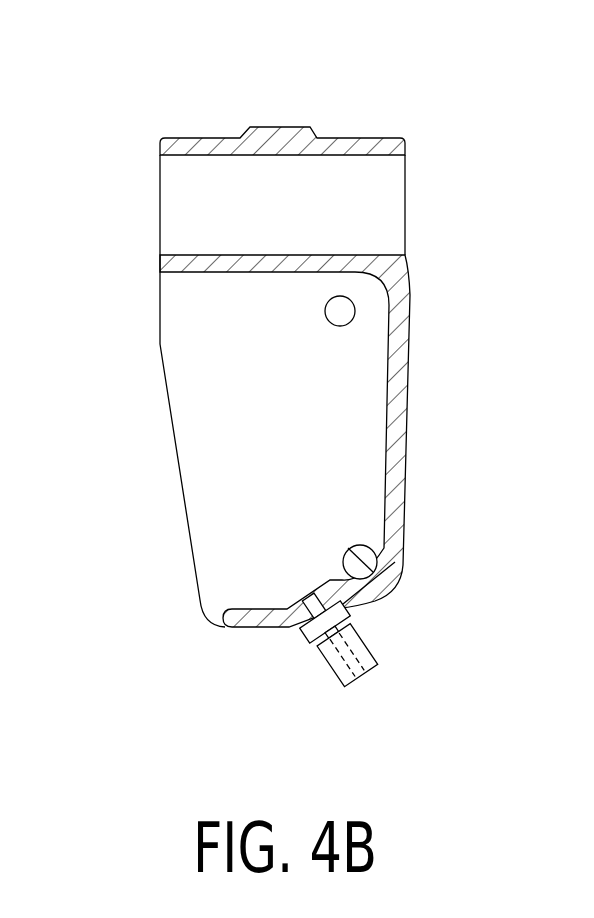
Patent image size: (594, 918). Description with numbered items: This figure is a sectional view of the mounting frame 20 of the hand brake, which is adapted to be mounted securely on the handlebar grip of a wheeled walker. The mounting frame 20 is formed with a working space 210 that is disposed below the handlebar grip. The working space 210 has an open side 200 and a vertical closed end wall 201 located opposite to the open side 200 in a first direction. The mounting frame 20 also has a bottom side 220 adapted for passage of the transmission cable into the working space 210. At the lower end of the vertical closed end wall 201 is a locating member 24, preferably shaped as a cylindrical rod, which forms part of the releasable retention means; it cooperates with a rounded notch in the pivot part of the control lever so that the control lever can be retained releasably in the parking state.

The mounting frame 20 is at (343, 393).
The open side 200 is at (195, 448).
The vertical closed end wall 201 is at (390, 320).
The working space 210 is at (360, 427).
The locating member 24 is at (368, 557).
The bottom side 220 is at (305, 610).